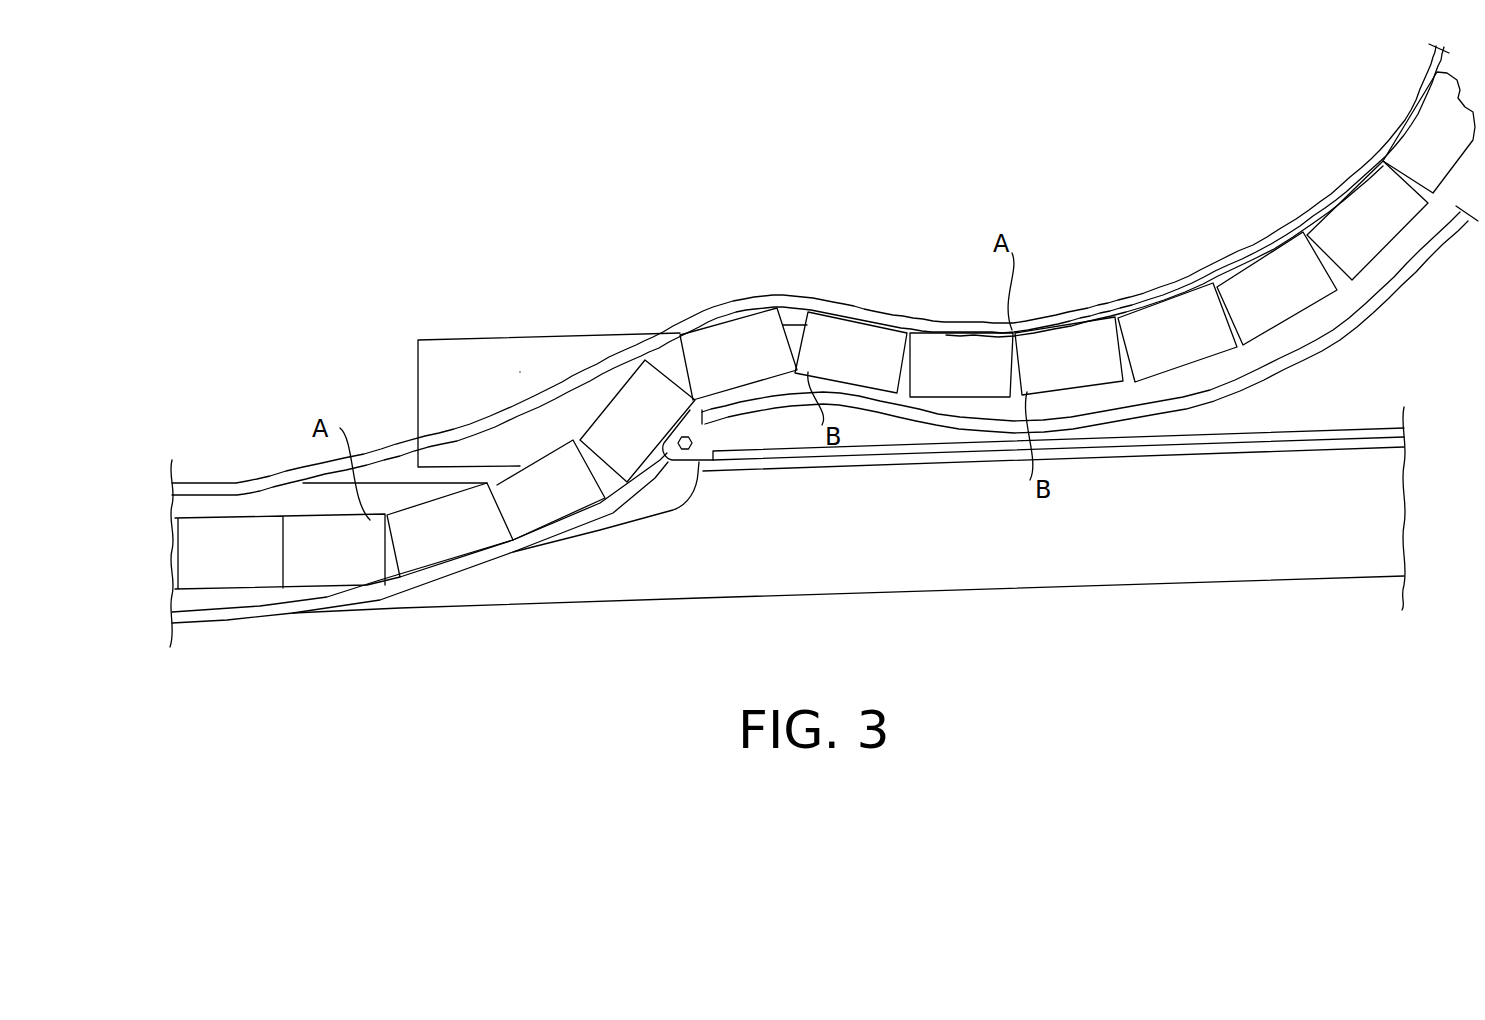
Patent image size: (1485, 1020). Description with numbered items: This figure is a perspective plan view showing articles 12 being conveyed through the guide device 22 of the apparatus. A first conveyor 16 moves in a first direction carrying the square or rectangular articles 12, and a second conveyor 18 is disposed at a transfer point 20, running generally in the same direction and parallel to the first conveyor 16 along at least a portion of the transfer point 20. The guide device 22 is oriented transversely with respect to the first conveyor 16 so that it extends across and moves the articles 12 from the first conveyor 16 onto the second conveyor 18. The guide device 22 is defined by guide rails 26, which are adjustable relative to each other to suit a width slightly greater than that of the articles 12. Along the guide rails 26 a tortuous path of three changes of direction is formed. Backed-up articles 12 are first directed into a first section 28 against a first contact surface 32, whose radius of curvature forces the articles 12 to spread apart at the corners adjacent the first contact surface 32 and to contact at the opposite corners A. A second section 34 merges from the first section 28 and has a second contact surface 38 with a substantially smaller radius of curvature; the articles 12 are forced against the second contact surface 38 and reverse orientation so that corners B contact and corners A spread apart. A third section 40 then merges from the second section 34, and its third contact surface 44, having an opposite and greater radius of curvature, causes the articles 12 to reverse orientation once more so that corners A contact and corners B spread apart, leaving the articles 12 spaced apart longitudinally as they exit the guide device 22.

The articles 12 is at (228, 575).
The first conveyor 16 is at (785, 577).
The second conveyor 18 is at (452, 355).
The transfer point 20 is at (463, 455).
The guide device 22 is at (862, 244).
The guide rails 26 is at (343, 600).
The first section 28 is at (541, 433).
The first contact surface 32 is at (537, 540).
The second section 34 is at (752, 332).
The second contact surface 38 is at (727, 302).
The third section 40 is at (1170, 350).
The third contact surface 44 is at (1143, 300).